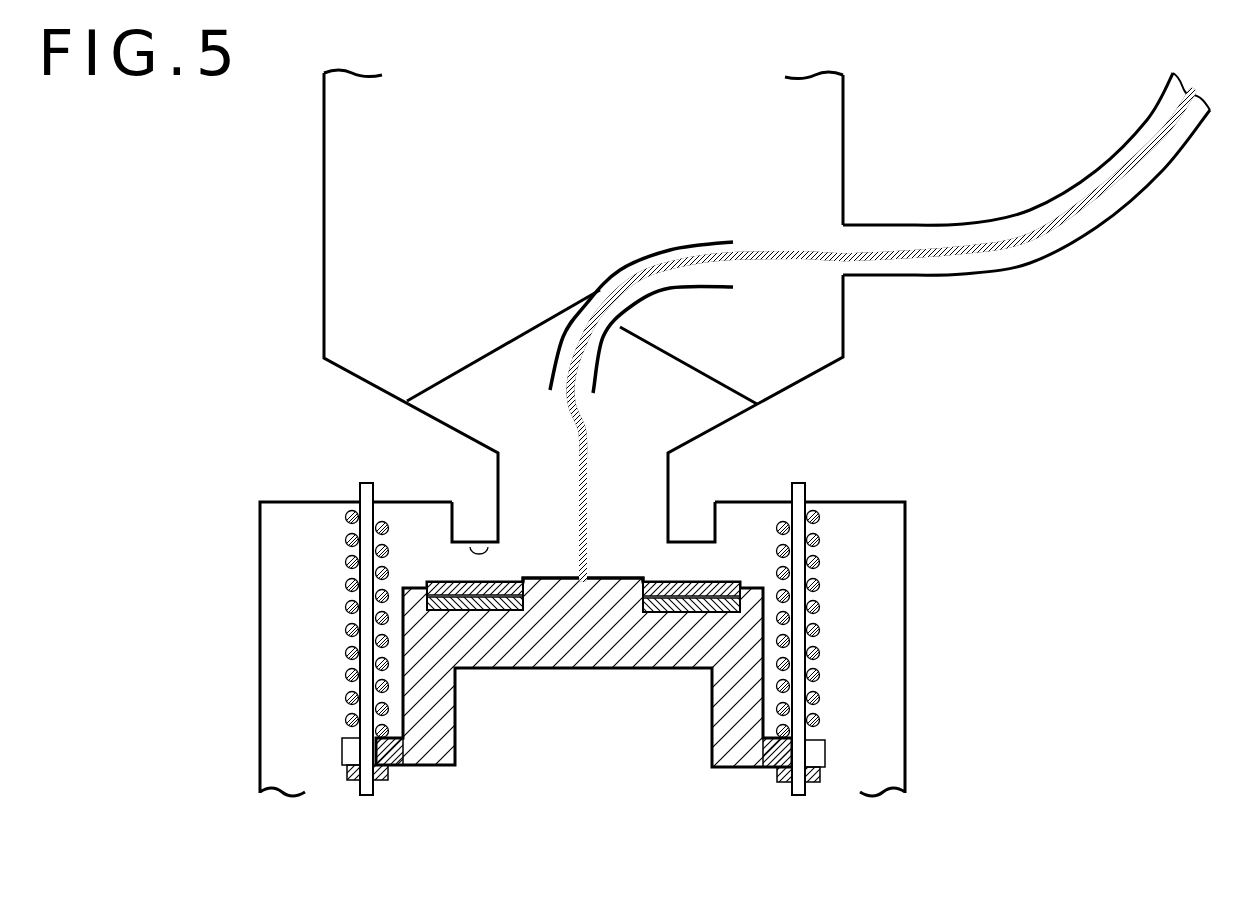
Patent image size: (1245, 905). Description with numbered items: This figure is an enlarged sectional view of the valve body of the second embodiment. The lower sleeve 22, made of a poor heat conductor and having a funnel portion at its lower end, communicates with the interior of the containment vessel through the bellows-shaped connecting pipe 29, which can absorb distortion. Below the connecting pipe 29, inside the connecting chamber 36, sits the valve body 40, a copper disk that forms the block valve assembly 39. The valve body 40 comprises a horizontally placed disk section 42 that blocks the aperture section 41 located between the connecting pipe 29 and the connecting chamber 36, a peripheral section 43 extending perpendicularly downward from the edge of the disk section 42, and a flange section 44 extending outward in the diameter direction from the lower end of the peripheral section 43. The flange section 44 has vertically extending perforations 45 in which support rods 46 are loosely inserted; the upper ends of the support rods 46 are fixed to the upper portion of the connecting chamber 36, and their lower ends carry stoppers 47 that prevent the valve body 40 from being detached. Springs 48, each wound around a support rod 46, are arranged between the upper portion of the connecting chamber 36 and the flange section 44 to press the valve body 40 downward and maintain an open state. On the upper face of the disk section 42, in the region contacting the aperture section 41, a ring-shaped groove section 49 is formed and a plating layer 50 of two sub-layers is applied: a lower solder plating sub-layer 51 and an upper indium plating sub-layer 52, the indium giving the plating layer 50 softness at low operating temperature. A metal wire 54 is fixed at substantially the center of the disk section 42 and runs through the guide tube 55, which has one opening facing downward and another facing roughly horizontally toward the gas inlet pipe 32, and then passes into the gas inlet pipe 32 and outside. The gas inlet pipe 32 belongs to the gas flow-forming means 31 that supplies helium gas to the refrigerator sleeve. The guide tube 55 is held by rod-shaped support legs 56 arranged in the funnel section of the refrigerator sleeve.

The lower sleeve 22 is at (844, 127).
The connecting pipe 29 is at (668, 483).
The gas flow-forming means 31 is at (959, 298).
The gas inlet pipe 32 is at (1073, 248).
The connecting chamber 36 is at (905, 522).
The drive unit 39 is at (956, 692).
The valve body 40 is at (493, 628).
The aperture section 41 is at (486, 546).
The disk section 42 is at (626, 574).
The peripheral section 43 is at (442, 712).
The flange section 44 is at (825, 760).
The perforations 45 is at (378, 750).
The support rods 46 is at (359, 488).
The stoppers 47 is at (347, 778).
The springs 48 is at (388, 560).
The groove section 49 is at (499, 584).
The plating layer 50 is at (832, 588).
The solder plating sub-layer 51 is at (742, 600).
The indium plating sub-layer 52 is at (742, 586).
The wire 54 is at (777, 253).
The guide tube 55 is at (623, 267).
The support legs 56 is at (707, 368).